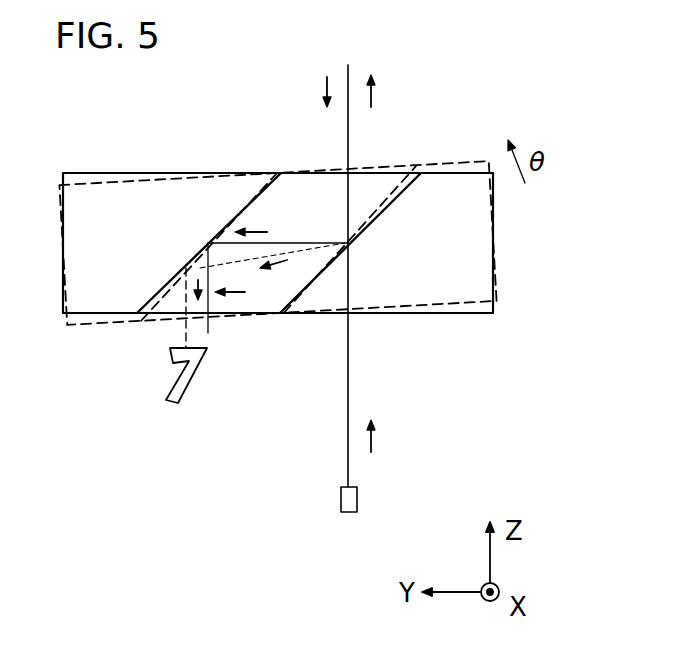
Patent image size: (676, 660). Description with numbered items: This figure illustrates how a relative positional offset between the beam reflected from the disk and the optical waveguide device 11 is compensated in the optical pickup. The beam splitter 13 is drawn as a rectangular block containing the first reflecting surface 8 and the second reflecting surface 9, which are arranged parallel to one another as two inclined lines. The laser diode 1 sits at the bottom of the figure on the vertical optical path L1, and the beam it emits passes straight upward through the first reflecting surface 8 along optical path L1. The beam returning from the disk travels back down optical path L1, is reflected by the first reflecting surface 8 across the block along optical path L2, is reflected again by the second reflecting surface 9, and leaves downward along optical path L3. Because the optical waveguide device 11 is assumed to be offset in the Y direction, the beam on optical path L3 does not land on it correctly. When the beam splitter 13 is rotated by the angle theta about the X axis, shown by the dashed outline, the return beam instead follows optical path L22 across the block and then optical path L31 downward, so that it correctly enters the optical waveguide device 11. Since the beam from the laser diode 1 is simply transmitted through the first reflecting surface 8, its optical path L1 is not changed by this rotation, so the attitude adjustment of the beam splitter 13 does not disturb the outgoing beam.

The laser diode 1 is at (341, 500).
The first reflecting surface 8 is at (390, 205).
The second reflecting surface 9 is at (158, 290).
The optical waveguide device 11 is at (170, 405).
The beam splitter 13 is at (525, 278).
The optical path L1 is at (348, 137).
The optical path L2 is at (290, 243).
The deflected light beam after rotation L22 is at (240, 261).
The optical path L3 is at (208, 333).
The optical path L31 is at (183, 328).